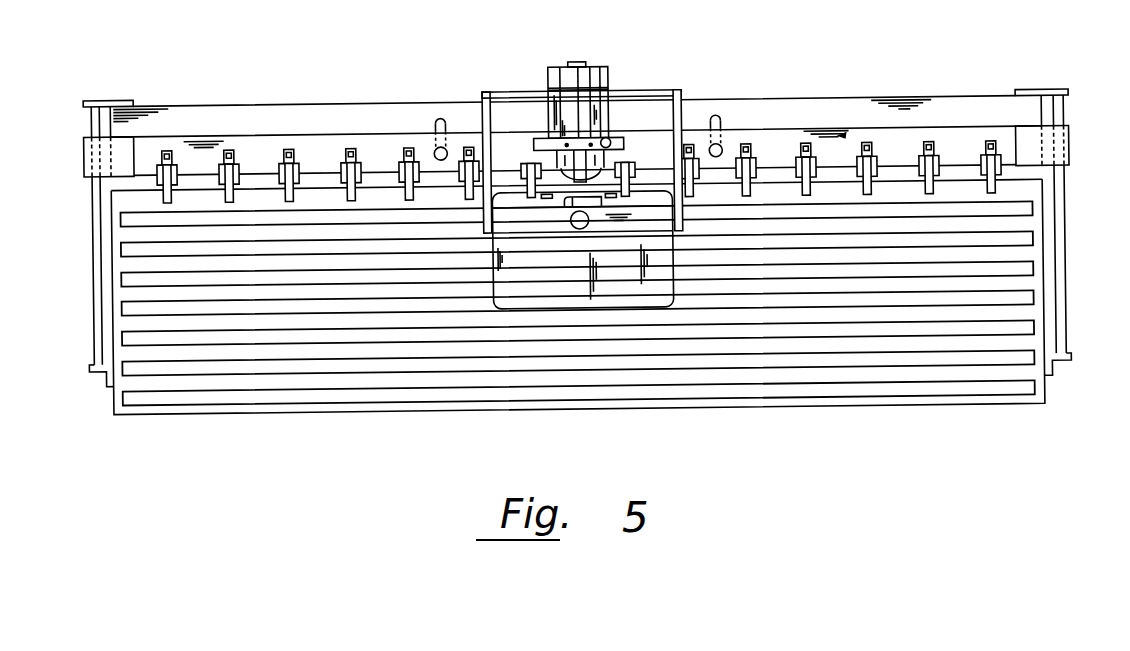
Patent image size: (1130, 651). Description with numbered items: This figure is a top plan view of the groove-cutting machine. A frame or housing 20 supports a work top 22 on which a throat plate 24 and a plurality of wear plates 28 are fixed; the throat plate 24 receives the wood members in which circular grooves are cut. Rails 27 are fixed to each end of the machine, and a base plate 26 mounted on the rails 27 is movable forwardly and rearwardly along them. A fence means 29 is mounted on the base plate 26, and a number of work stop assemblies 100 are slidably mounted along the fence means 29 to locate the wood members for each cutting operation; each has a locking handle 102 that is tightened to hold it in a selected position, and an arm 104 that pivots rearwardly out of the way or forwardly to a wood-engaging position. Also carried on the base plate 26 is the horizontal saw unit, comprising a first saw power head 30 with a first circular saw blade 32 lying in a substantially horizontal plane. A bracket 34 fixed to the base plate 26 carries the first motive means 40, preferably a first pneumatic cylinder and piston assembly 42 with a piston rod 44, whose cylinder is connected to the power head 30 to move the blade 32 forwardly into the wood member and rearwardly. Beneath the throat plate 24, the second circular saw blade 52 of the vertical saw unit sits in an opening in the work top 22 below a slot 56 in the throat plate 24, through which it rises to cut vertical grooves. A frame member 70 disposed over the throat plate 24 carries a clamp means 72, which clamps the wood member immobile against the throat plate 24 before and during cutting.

The frame 20 is at (1046, 391).
The work top 22 is at (763, 117).
The throat plate 24 is at (574, 296).
The base plate 26 is at (831, 142).
The rails 27 is at (92, 266).
The wear plates 28 is at (1024, 214).
The fence means 29 is at (963, 171).
The first saw power head 30 is at (636, 72).
The first circular saw blade 32 is at (600, 177).
The bracket 34 is at (542, 135).
The first motive means 40 is at (577, 157).
The first pneumatic cylinder and piston assembly 42 is at (594, 154).
The piston rod 44 is at (586, 102).
The second circular saw blade 52 is at (603, 206).
The slot 56 is at (563, 207).
The frame member 70 is at (688, 112).
The clamp means 72 is at (587, 227).
The work stop assemblies 100 is at (301, 174).
The locking handle 102 is at (290, 146).
The arm 104 is at (280, 184).